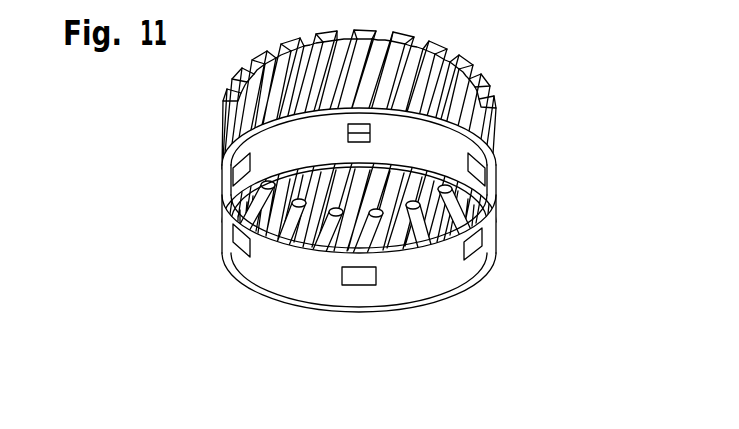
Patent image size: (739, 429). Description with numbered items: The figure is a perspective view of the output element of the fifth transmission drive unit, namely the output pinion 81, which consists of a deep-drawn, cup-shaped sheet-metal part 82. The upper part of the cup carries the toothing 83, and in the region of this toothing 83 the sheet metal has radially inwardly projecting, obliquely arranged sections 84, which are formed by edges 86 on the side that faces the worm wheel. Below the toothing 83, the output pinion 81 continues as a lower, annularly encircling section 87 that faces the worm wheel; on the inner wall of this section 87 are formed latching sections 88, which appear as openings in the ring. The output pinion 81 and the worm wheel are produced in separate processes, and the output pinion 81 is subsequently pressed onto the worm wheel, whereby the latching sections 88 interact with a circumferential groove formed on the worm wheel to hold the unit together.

The output pinion 81 is at (414, 243).
The sheet-metal part 82 is at (414, 243).
The toothing 83 is at (466, 83).
The sections 84 is at (392, 226).
The edges 86 is at (343, 247).
The annularly encircling section 87 is at (393, 291).
The latching sections 88 is at (352, 280).